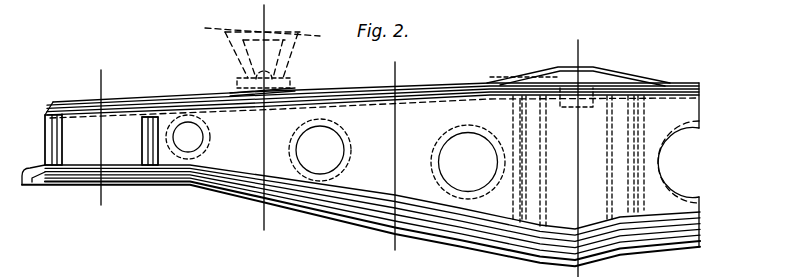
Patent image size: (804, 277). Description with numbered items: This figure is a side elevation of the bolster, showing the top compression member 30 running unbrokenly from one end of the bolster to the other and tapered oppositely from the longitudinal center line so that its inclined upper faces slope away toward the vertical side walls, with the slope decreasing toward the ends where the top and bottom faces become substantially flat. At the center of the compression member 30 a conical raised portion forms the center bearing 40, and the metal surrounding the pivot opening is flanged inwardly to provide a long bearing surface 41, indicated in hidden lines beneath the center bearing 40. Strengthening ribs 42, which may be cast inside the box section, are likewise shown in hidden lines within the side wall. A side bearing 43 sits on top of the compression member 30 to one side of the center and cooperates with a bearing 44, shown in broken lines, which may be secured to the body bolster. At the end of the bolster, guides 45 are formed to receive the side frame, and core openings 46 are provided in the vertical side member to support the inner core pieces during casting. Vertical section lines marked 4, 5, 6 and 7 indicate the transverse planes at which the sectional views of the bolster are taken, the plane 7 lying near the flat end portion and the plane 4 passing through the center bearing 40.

The top compression member 30 is at (463, 82).
The center bearing 40 is at (615, 68).
The bearing surface 41 is at (348, 182).
The strengthening ribs 42 is at (518, 197).
The side bearing 43 is at (238, 93).
The bearing 44 is at (280, 80).
The guides 45 is at (58, 165).
The core openings 46 is at (203, 137).
The section line 4- 4 is at (584, 276).
The section line 5- 5 is at (401, 73).
The section line 6- 6 is at (290, 18).
The section line 7- 7 is at (125, 78).